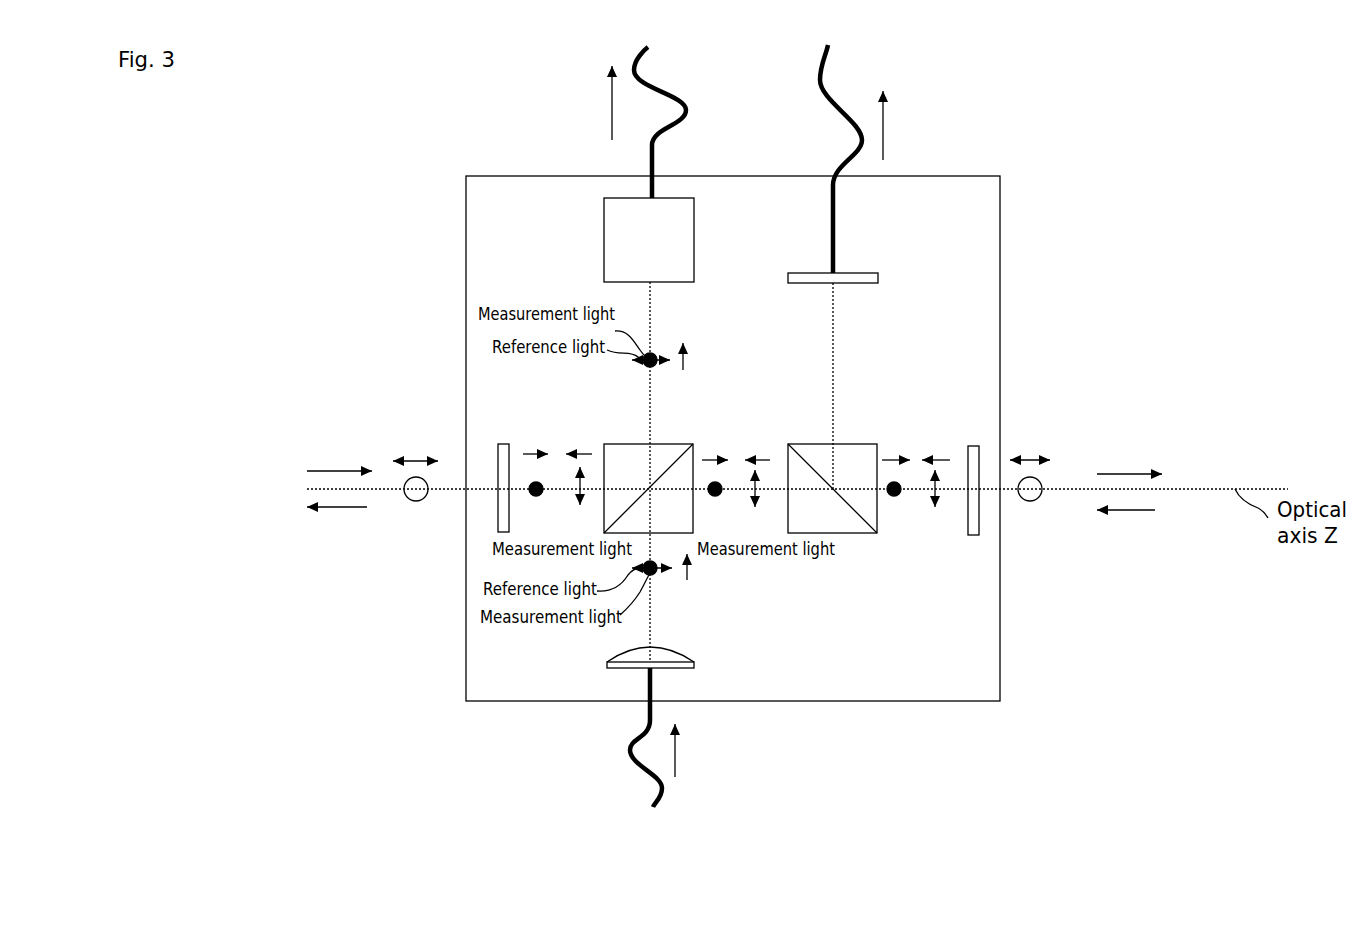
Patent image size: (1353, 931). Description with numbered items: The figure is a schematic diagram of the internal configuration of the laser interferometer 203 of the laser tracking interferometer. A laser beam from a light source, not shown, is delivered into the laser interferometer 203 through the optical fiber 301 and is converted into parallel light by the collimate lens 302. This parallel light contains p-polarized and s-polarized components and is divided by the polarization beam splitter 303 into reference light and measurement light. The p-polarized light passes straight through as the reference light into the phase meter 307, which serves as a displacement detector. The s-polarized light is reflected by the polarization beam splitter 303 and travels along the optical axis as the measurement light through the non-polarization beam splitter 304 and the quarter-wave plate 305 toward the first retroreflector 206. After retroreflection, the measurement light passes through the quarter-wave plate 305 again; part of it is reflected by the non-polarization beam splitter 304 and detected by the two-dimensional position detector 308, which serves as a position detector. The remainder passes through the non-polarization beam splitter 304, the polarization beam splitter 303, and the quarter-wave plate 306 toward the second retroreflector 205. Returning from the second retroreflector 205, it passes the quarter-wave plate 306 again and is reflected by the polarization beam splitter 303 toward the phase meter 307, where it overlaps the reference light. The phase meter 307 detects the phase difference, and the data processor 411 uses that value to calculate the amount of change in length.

The laser interferometer 203 is at (1000, 272).
The optical fiber 301 is at (667, 797).
The collimate lens 302 is at (670, 661).
The polarization beam splitter 303 is at (663, 457).
The non-polarization beam splitter 304 is at (850, 458).
The λ/4 plate 305 is at (973, 512).
The λ/4 plate 306 is at (503, 462).
The phase meter 307 is at (613, 242).
The two-dimensional position detector 308 is at (849, 277).
The second retroreflector 205 is at (287, 487).
The first retroreflector 206 is at (1170, 503).
The data processor 411 is at (745, 113).